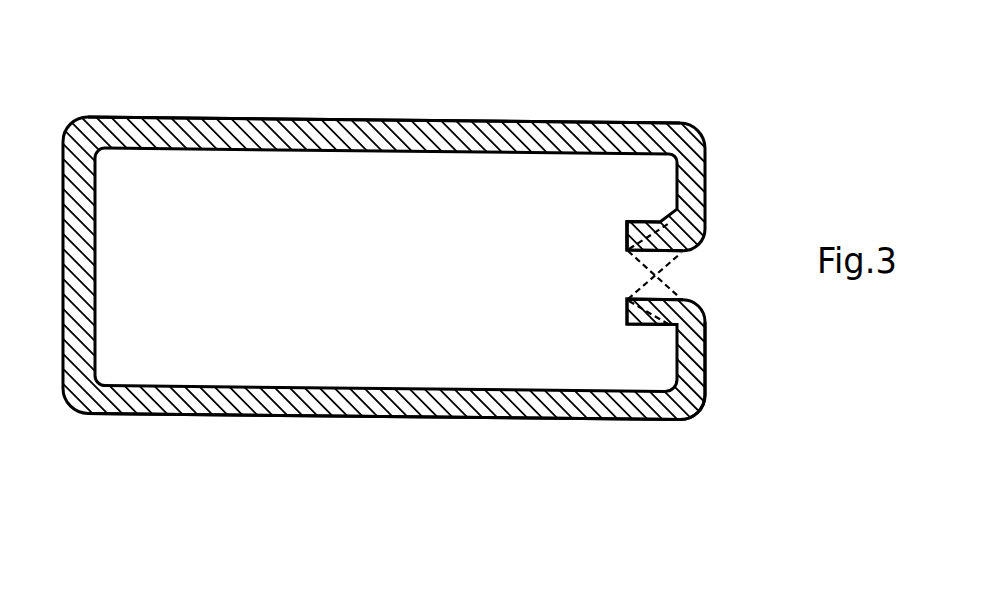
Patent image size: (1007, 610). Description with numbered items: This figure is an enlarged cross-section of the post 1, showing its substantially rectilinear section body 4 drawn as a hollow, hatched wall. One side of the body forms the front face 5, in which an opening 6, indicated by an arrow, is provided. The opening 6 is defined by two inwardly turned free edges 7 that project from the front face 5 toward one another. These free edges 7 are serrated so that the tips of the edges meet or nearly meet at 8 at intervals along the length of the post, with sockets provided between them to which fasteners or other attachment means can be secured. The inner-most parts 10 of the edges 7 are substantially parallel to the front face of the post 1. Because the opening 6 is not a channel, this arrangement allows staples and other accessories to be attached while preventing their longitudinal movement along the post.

The post 1 is at (118, 420).
The body 4 is at (124, 118).
The front face 5 is at (703, 390).
The opening 6 is at (675, 277).
The free edges 7 is at (627, 244).
The meeting point of tips 8 is at (677, 295).
The inner-most parts 10 is at (627, 237).